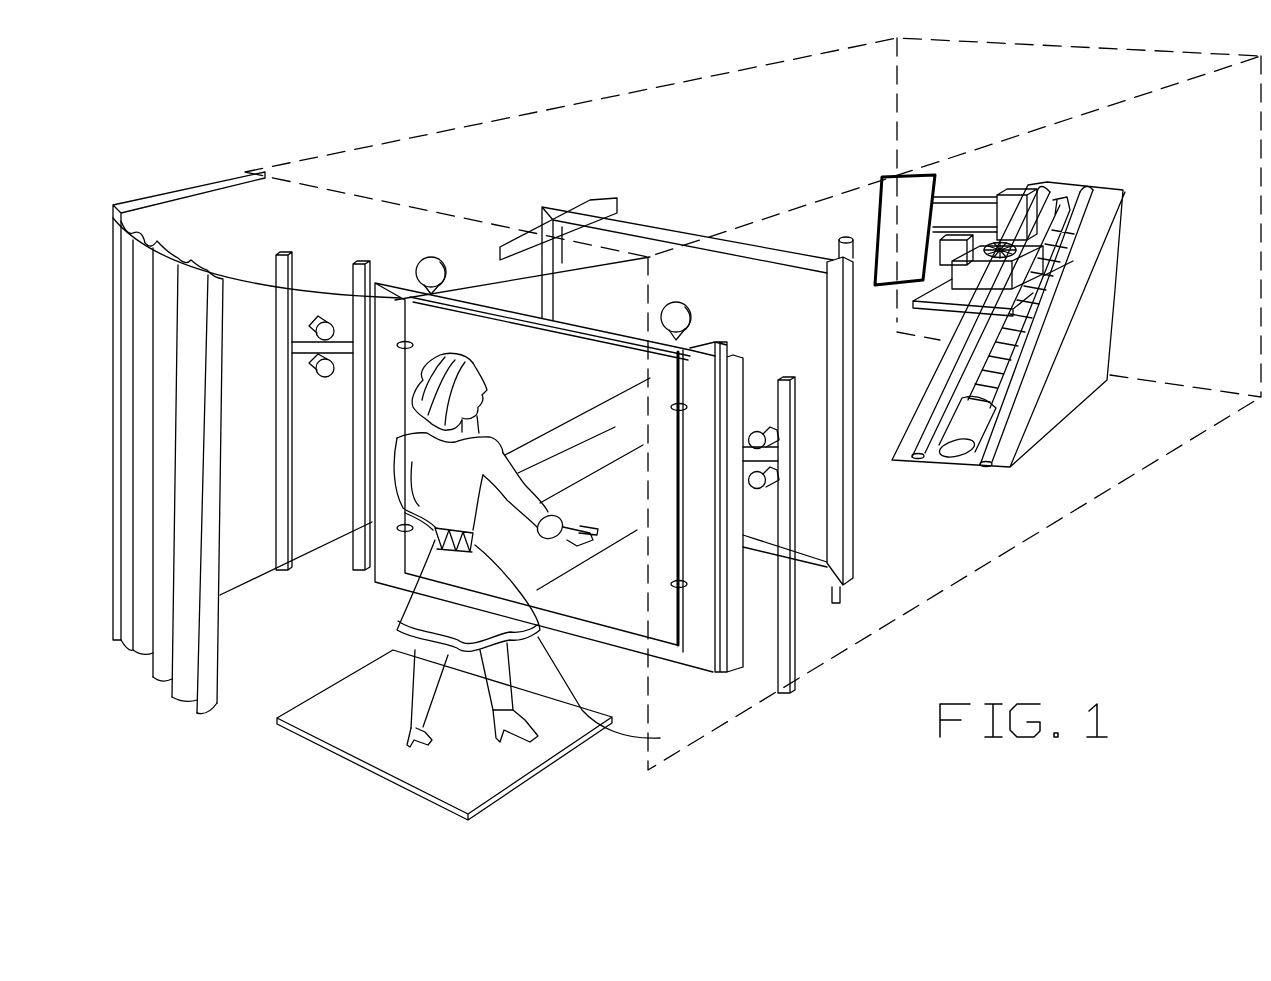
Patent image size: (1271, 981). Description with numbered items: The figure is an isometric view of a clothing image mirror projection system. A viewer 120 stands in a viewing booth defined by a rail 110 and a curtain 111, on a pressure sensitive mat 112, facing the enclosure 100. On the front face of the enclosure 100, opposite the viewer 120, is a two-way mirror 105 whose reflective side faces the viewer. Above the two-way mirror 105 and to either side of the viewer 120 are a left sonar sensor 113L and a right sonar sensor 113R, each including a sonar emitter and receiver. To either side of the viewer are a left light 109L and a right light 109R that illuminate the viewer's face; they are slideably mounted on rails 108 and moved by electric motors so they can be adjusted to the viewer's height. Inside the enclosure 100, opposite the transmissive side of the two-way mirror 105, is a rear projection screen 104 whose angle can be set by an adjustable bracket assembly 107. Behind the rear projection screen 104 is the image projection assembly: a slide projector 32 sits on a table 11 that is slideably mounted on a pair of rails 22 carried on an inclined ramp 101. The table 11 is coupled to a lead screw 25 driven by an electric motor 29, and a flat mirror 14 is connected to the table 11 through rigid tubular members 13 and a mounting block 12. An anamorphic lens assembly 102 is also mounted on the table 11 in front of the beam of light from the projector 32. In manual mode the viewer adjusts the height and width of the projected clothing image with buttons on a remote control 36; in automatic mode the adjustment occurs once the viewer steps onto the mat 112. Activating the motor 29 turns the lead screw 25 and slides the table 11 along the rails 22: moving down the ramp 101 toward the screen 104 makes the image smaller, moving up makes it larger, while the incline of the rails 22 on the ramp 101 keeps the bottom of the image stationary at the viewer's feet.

The enclosure 100 is at (1118, 50).
The curtain 111 is at (142, 295).
The rail 110 is at (238, 278).
The rails 108 is at (360, 266).
The left light 109L is at (328, 322).
The right light 109R is at (775, 430).
The left sonar sensor 113L is at (424, 257).
The right sonar sensor 113R is at (691, 318).
The two-way mirror 105 is at (640, 632).
The remote control 36 is at (583, 534).
The rear projection screen 104 is at (807, 513).
The adjustable bracket assembly 107 is at (600, 198).
The flat mirror 14 is at (903, 190).
The rigid tubular members 13 is at (980, 237).
The mounting block 12 is at (1017, 183).
The anamorphic lens assembly 102 is at (953, 250).
The table 11 is at (1077, 263).
The slide projector 32 is at (1060, 267).
The ramp 101 is at (1080, 353).
The rails 22 is at (1057, 187).
The lead screw 25 is at (990, 378).
The electric motor 29 is at (957, 450).
The pressure sensitive mat 112 is at (470, 795).
The viewer 120 is at (660, 738).